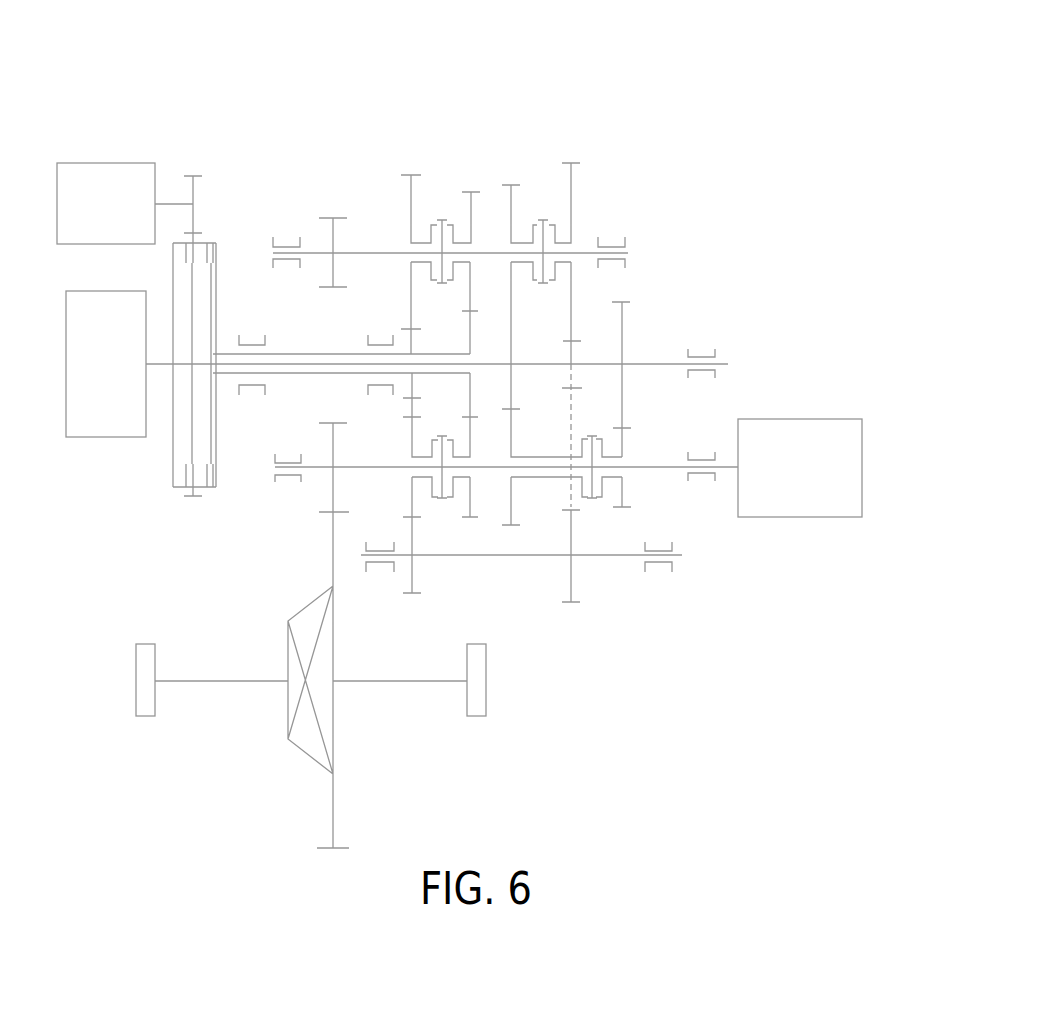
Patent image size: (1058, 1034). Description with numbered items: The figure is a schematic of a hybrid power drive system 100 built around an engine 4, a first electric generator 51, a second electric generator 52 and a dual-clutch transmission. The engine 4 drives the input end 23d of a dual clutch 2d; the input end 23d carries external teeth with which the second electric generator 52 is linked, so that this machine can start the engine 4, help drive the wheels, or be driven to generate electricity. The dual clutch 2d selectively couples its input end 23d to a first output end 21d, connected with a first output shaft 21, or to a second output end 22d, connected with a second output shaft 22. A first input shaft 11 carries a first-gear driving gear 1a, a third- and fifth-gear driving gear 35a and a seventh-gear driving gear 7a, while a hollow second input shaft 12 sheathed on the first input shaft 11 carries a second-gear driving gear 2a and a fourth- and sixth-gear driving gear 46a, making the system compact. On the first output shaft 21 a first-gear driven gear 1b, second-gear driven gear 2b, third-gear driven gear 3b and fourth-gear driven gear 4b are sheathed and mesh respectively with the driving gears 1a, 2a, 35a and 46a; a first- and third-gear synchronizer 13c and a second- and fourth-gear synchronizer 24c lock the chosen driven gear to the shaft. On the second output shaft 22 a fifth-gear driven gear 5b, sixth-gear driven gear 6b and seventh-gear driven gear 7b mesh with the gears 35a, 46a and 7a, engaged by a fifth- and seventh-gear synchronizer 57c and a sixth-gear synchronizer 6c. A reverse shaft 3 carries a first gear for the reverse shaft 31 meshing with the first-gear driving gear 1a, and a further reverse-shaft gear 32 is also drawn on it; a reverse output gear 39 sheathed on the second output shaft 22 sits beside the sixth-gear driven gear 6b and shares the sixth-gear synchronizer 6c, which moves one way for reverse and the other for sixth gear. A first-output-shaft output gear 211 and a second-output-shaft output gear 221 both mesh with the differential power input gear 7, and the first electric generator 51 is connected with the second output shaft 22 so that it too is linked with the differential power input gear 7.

The power drive system 100 is at (408, 117).
The engine 4 is at (87, 330).
The second electric generator 52 is at (91, 193).
The first electric generator 51 is at (830, 477).
The dual clutch 2d is at (62, 465).
The first output end 21d is at (190, 428).
The second output end 22d is at (211, 445).
The input end 23d is at (170, 413).
The first output shaft 21 is at (628, 253).
The first-output-shaft output gear 211 is at (331, 218).
The first input shaft 11 is at (728, 363).
The second input shaft 12 is at (300, 353).
The second output shaft 22 is at (720, 465).
The second-output-shaft output gear 221 is at (333, 445).
The reverse shaft 3 is at (682, 555).
The first gear for the reverse shaft 31 is at (572, 600).
The intermediate gear 32 is at (414, 575).
The second-gear driven gear 2b is at (411, 176).
The fourth-gear driven gear 4b is at (471, 192).
The second- and fourth-gear synchronizer 24c is at (441, 218).
The third-gear driven gear 3b is at (511, 185).
The first-gear driven gear 1b is at (571, 163).
The first- and third-gear synchronizer 13c is at (543, 220).
The second-gear driving gear 2a is at (410, 342).
The fourth- and sixth-gear driving gear 46a is at (470, 340).
The third- and fifth-gear driving gear 35a is at (511, 340).
The first-gear driving gear 1a is at (571, 345).
The seventh-gear driving gear 7a is at (623, 310).
The sixth-gear driven gear 6b is at (470, 428).
The fifth-gear driven gear 5b is at (511, 440).
The seventh-gear driven gear 7b is at (622, 445).
The fifth- and seventh-gear synchronizer 57c is at (593, 480).
The sixth-gear synchronizer 6c is at (442, 500).
The reverse output gear 39 is at (409, 443).
The differential power input gear 7 is at (336, 836).